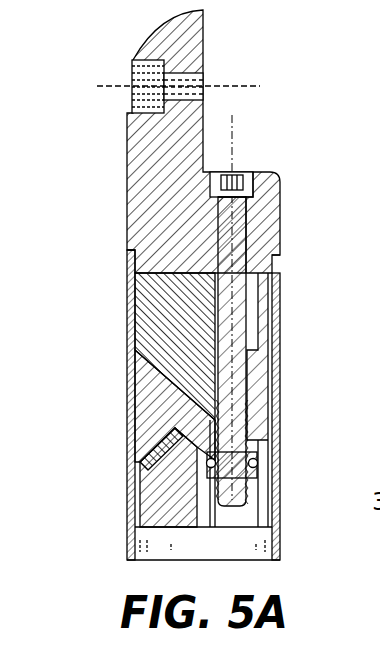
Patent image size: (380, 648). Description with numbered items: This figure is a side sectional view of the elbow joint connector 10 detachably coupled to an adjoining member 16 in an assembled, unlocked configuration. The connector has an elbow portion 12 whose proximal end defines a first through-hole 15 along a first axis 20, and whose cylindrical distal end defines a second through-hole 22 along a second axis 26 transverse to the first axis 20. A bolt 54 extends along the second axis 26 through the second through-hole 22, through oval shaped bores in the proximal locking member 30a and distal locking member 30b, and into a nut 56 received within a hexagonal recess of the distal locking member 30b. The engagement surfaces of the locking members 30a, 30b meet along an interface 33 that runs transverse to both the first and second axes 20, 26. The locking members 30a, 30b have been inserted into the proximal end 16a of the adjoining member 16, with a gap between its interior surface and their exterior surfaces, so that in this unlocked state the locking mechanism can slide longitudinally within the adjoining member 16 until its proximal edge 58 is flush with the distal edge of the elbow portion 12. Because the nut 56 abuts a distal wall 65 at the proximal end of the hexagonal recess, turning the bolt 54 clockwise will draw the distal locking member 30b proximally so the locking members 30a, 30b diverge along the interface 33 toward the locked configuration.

The elbow joint connector 10 is at (153, 331).
The elbow portion 12 is at (140, 150).
The first through-hole 15 is at (204, 86).
The adjoining member 16 is at (281, 381).
The proximal end 16a is at (283, 247).
The first axis 20 is at (100, 86).
The second through-hole 22 is at (238, 222).
The second axis 26 is at (236, 141).
The proximal locking member 30a is at (151, 392).
The distal locking member 30b is at (159, 481).
The interface 33 is at (172, 419).
The bolt 54 is at (248, 220).
The nut 56 is at (255, 463).
The proximal edge 58 is at (128, 246).
The distal wall 65 is at (258, 433).